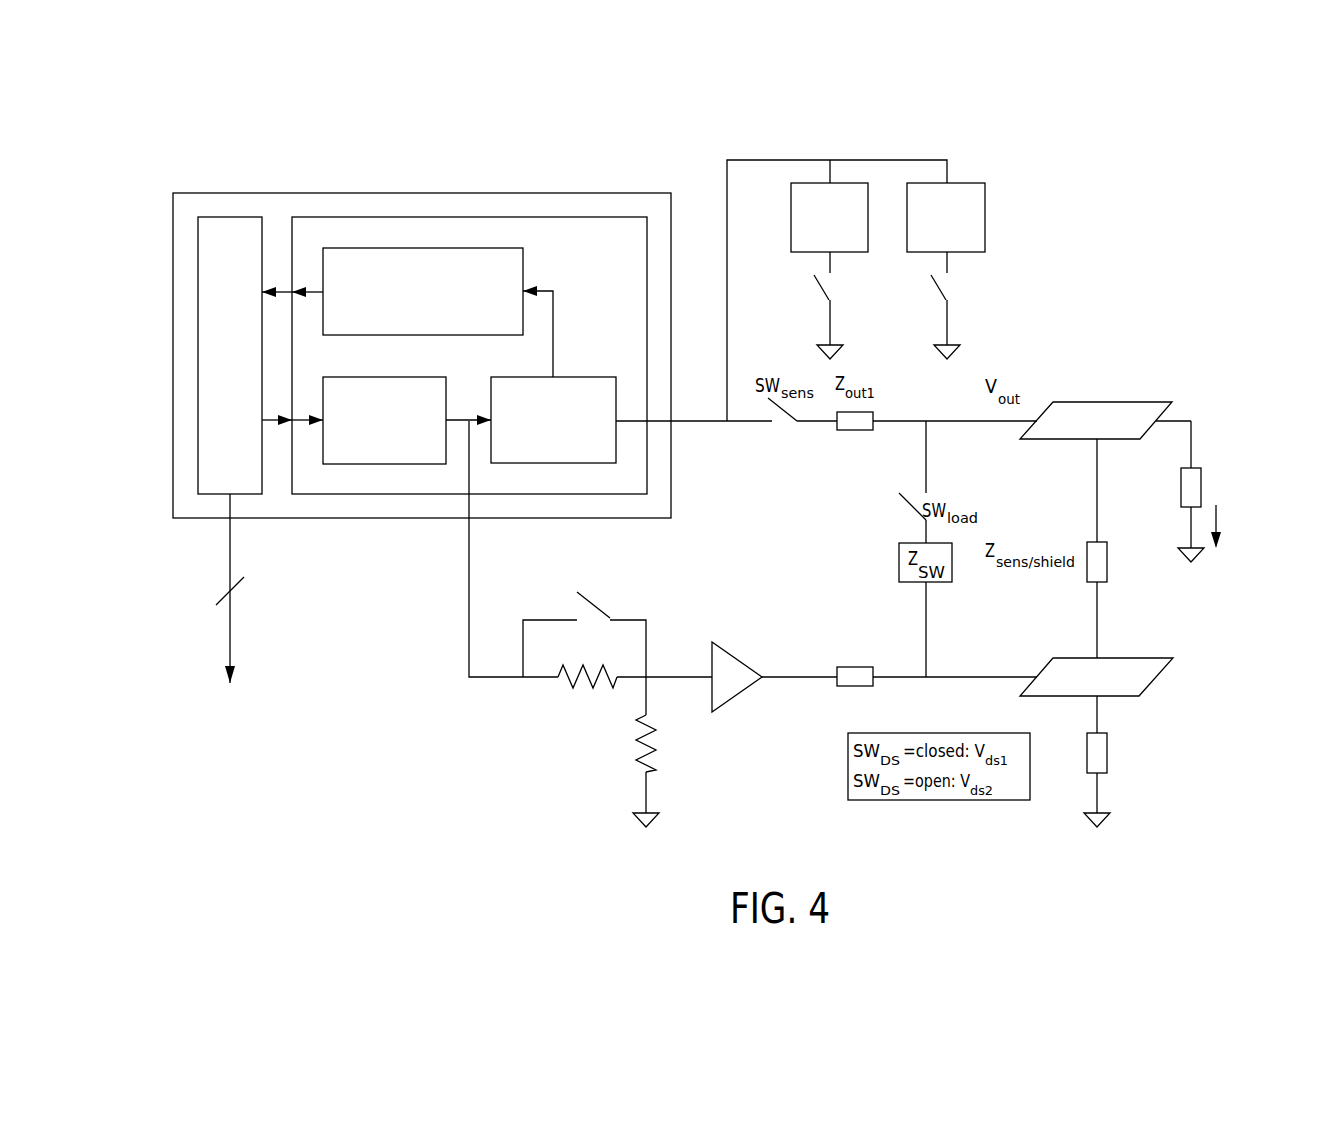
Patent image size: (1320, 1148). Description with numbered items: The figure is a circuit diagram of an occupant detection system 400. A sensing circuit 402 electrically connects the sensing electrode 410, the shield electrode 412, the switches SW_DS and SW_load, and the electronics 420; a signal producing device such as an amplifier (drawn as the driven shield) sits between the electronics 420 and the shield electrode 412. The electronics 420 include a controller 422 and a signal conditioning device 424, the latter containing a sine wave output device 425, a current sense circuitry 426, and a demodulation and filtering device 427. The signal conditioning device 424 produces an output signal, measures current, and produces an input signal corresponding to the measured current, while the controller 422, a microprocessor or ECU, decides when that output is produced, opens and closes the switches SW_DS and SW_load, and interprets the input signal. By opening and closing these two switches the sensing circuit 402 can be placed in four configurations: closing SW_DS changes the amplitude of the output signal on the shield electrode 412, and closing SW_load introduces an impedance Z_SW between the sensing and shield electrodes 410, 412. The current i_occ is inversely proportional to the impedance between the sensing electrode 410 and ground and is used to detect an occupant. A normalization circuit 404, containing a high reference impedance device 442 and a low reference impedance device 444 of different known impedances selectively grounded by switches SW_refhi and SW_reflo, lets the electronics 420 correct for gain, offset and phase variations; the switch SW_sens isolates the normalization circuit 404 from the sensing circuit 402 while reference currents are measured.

The occupant detection system 400 is at (1072, 197).
The sensing circuit 402 is at (468, 548).
The normalization circuit 404 is at (783, 160).
The sensing electrode 410 is at (1117, 401).
The shield electrode 412 is at (1115, 655).
The electronics 420 is at (422, 193).
The controller 422 is at (198, 355).
The signal conditioning device 424 is at (468, 217).
The sine wave output device 425 is at (383, 464).
The current sense circuitry 426 is at (595, 377).
The demodulation and filtering device 427 is at (525, 266).
The high reference impedance device 442 is at (848, 181).
The low reference impedance device 444 is at (967, 181).